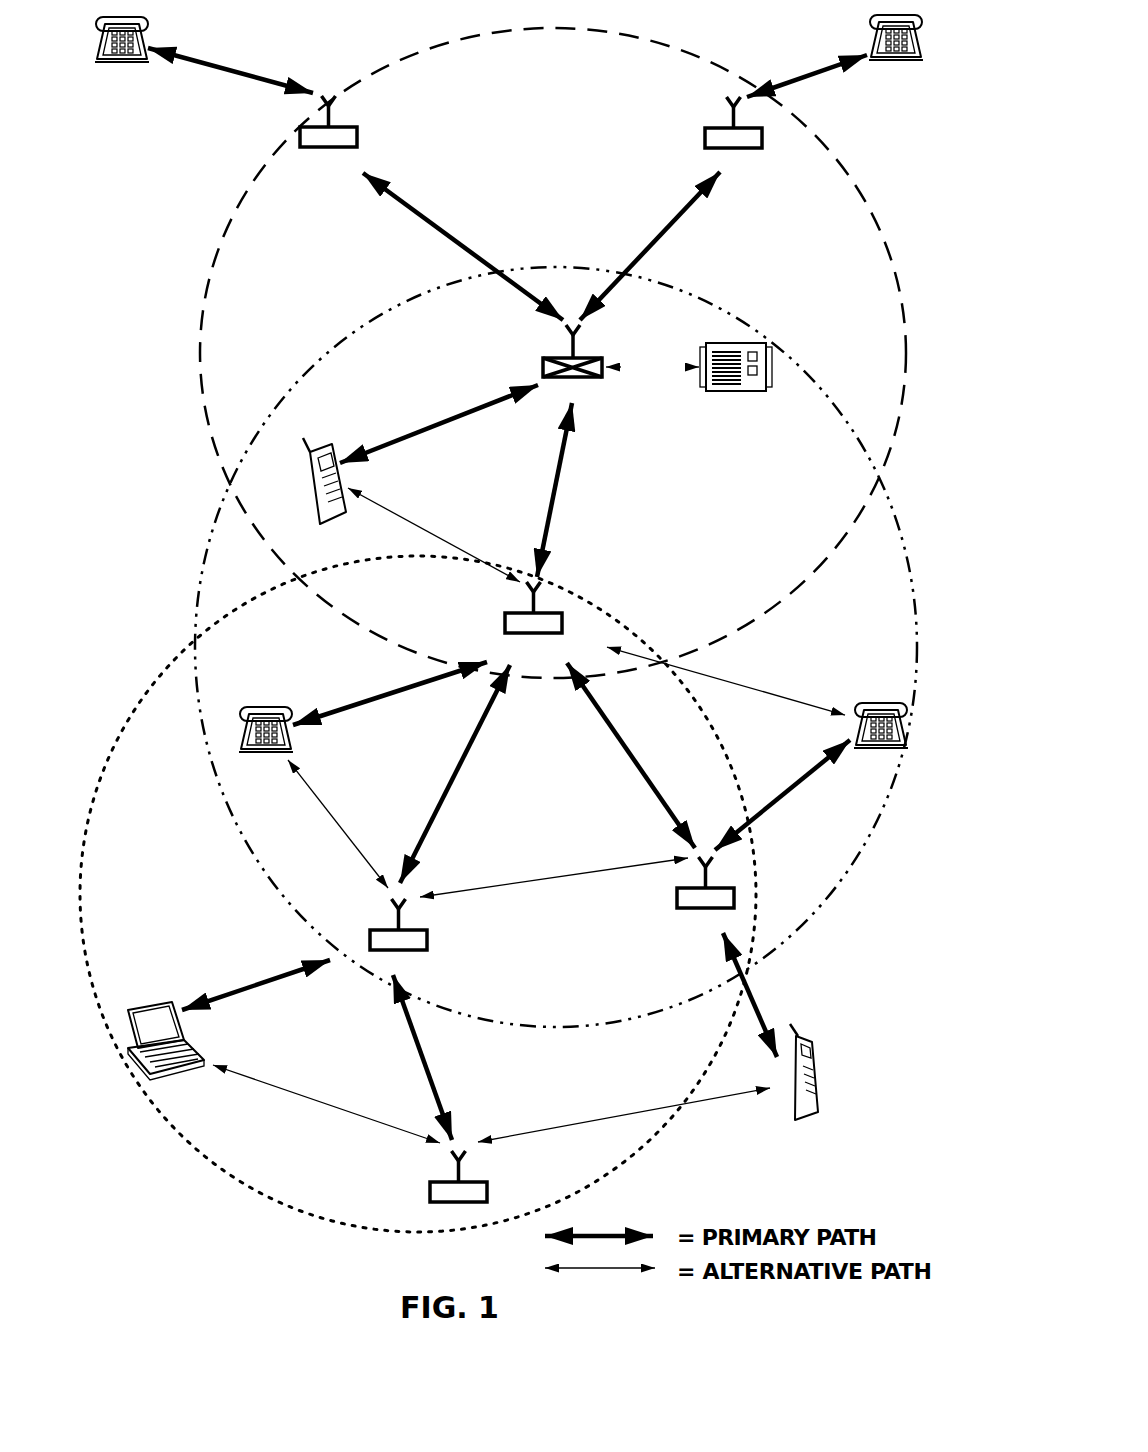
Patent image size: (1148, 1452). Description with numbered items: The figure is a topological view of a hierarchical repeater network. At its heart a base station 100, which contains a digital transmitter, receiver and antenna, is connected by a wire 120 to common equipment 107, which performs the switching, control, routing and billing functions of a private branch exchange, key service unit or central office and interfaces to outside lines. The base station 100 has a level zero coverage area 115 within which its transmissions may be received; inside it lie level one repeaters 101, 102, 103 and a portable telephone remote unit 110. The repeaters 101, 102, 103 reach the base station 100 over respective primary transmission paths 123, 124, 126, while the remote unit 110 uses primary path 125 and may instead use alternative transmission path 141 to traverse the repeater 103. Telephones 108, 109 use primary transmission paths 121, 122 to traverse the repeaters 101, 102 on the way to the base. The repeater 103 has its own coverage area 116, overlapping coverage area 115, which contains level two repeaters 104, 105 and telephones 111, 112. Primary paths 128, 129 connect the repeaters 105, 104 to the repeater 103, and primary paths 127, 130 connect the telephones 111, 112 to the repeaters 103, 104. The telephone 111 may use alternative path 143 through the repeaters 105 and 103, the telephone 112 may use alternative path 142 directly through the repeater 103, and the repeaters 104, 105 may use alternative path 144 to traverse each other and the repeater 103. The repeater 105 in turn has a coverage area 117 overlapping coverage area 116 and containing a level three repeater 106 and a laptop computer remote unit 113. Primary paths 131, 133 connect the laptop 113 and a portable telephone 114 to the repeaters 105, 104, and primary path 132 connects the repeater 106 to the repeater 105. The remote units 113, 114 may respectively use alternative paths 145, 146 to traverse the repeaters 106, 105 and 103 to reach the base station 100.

The base station 100 is at (548, 358).
The repeater 101 is at (343, 127).
The repeater 102 is at (710, 128).
The repeater 103 is at (562, 613).
The repeater 104 is at (735, 895).
The repeater 105 is at (375, 930).
The repeater 106 is at (430, 1182).
The common equipment 107 is at (745, 340).
The remote unit 108 is at (138, 65).
The remote unit 109 is at (900, 65).
The remote unit 110 is at (330, 445).
The remote unit 111 is at (285, 700).
The remote unit 112 is at (875, 697).
The remote unit 113 is at (150, 1005).
The remote unit 114 is at (820, 1085).
The coverage area 115 is at (208, 267).
The coverage area 116 is at (193, 563).
The coverage area 117 is at (160, 690).
The wire 120 is at (690, 360).
The primary transmission path 121 is at (238, 68).
The primary transmission path 122 is at (813, 68).
The primary transmission path 123 is at (428, 222).
The primary transmission path 124 is at (652, 222).
The primary path 125 is at (450, 427).
The primary transmission path 126 is at (560, 483).
The primary path 127 is at (400, 700).
The primary path 128 is at (465, 760).
The primary path 129 is at (625, 762).
The primary path 130 is at (800, 782).
The primary path 131 is at (280, 985).
The primary path 132 is at (425, 1045).
The primary path 133 is at (760, 1015).
The alternative transmission path 141 is at (388, 515).
The alternative path 142 is at (800, 702).
The alternative path 143 is at (335, 820).
The alternative path 144 is at (535, 880).
The alternative path 145 is at (280, 1085).
The alternative path 146 is at (650, 1106).